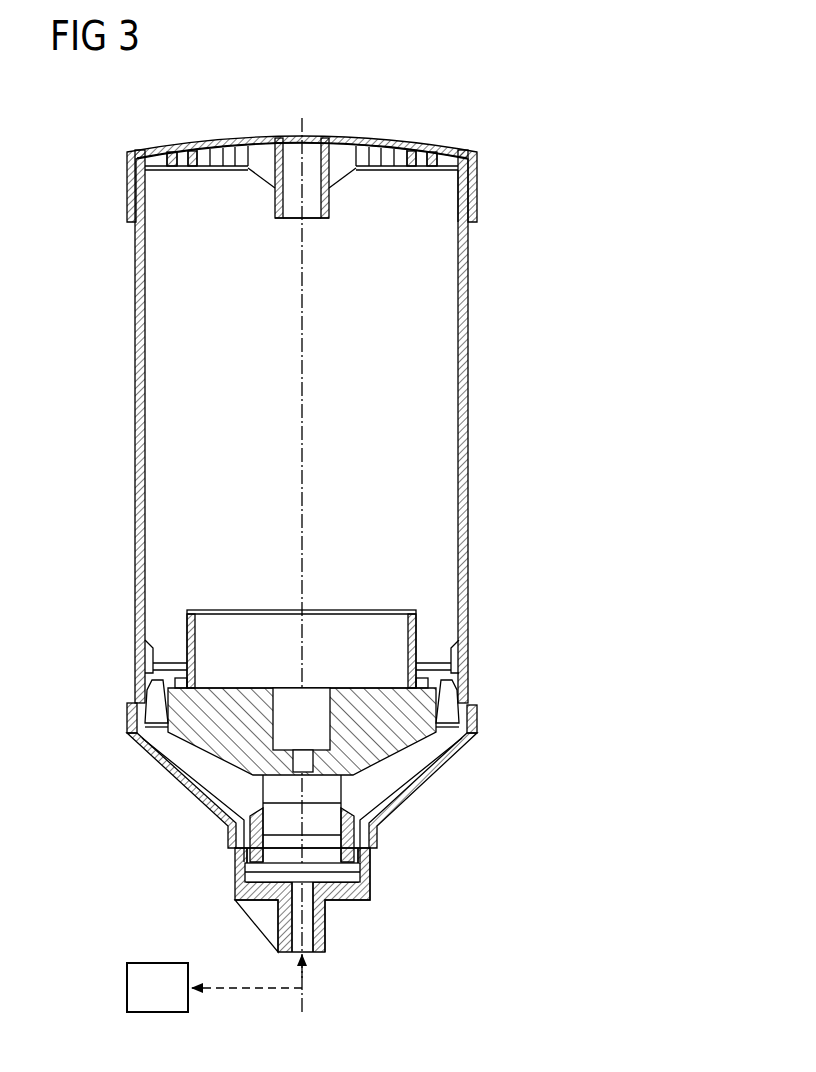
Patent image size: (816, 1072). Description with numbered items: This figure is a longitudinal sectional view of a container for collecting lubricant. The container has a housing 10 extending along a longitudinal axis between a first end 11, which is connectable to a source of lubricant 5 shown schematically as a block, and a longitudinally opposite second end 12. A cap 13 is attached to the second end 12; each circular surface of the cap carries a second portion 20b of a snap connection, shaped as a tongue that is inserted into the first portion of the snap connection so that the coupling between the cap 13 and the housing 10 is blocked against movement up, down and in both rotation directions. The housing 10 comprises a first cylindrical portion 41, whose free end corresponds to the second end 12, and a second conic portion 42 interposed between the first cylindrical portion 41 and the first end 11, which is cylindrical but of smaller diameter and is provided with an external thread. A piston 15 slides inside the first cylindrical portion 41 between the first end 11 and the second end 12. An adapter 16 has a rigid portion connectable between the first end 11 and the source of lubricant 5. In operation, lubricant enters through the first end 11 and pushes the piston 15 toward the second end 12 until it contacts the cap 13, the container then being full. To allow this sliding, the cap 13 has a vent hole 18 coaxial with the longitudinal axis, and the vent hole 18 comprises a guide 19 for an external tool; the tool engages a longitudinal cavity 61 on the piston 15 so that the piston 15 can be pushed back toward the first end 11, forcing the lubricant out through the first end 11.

The housing 10 is at (134, 266).
The first cylindrical portion 41 is at (467, 393).
The cap 13 is at (478, 149).
The second portion of snap connection 20b is at (135, 152).
The second end 12 is at (458, 195).
The vent hole 18 is at (321, 160).
The guide 19 is at (322, 220).
The piston 15 is at (419, 620).
The longitudinal cavity 61 is at (322, 697).
The adapter 16 is at (461, 764).
The second conic portion 42 is at (423, 788).
The first end 11 is at (378, 828).
The source of lubricant 5 is at (157, 963).